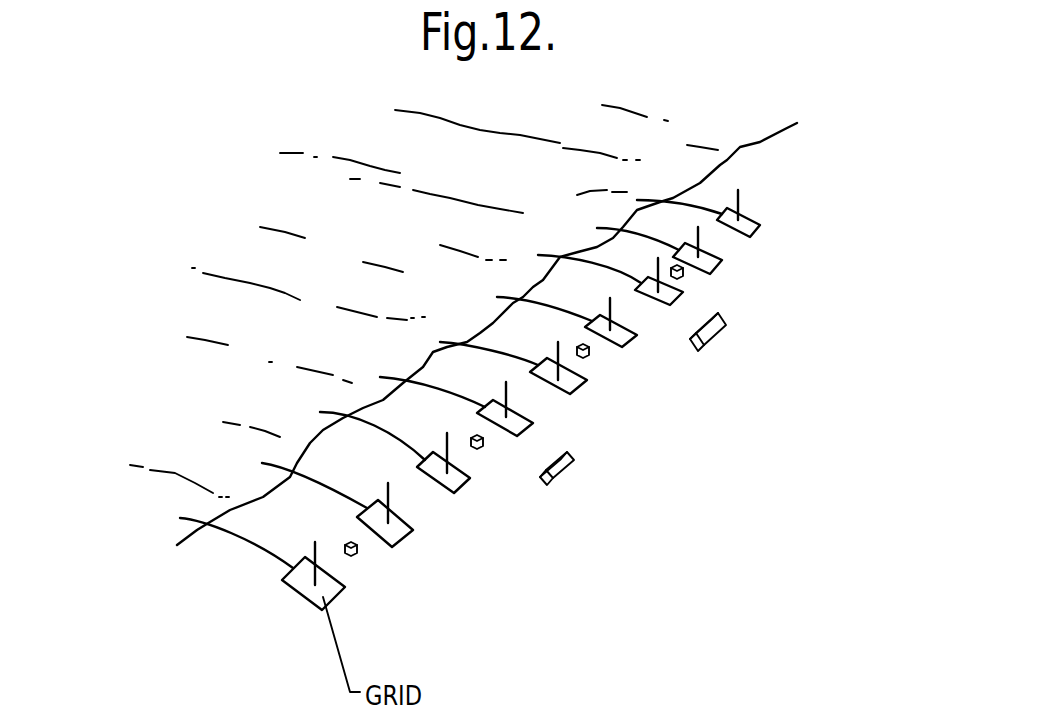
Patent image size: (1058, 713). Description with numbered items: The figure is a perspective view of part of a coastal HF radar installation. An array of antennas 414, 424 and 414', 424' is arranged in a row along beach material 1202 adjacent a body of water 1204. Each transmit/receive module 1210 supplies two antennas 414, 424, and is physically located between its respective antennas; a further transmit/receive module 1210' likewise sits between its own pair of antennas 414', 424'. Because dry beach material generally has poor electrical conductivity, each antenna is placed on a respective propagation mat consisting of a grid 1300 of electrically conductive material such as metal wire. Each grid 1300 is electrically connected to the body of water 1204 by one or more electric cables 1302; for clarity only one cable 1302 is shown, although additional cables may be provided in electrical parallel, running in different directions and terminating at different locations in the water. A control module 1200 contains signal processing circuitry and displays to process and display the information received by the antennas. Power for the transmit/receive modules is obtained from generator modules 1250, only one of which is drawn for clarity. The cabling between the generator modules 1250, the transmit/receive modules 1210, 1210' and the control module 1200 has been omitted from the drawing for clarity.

The body of water 1204 is at (728, 127).
The beach material 1202 is at (848, 177).
The control module 1200 is at (717, 340).
The generator module 1250 is at (572, 462).
The transmit/receive module 1210 is at (260, 483).
The transmit/receive module 1210' is at (566, 484).
The antenna 424 is at (385, 518).
The antenna 424' is at (551, 415).
The antenna 414 is at (369, 596).
The antenna 414' is at (502, 485).
The grid 1300 is at (307, 610).
The electric cable 1302 is at (250, 545).